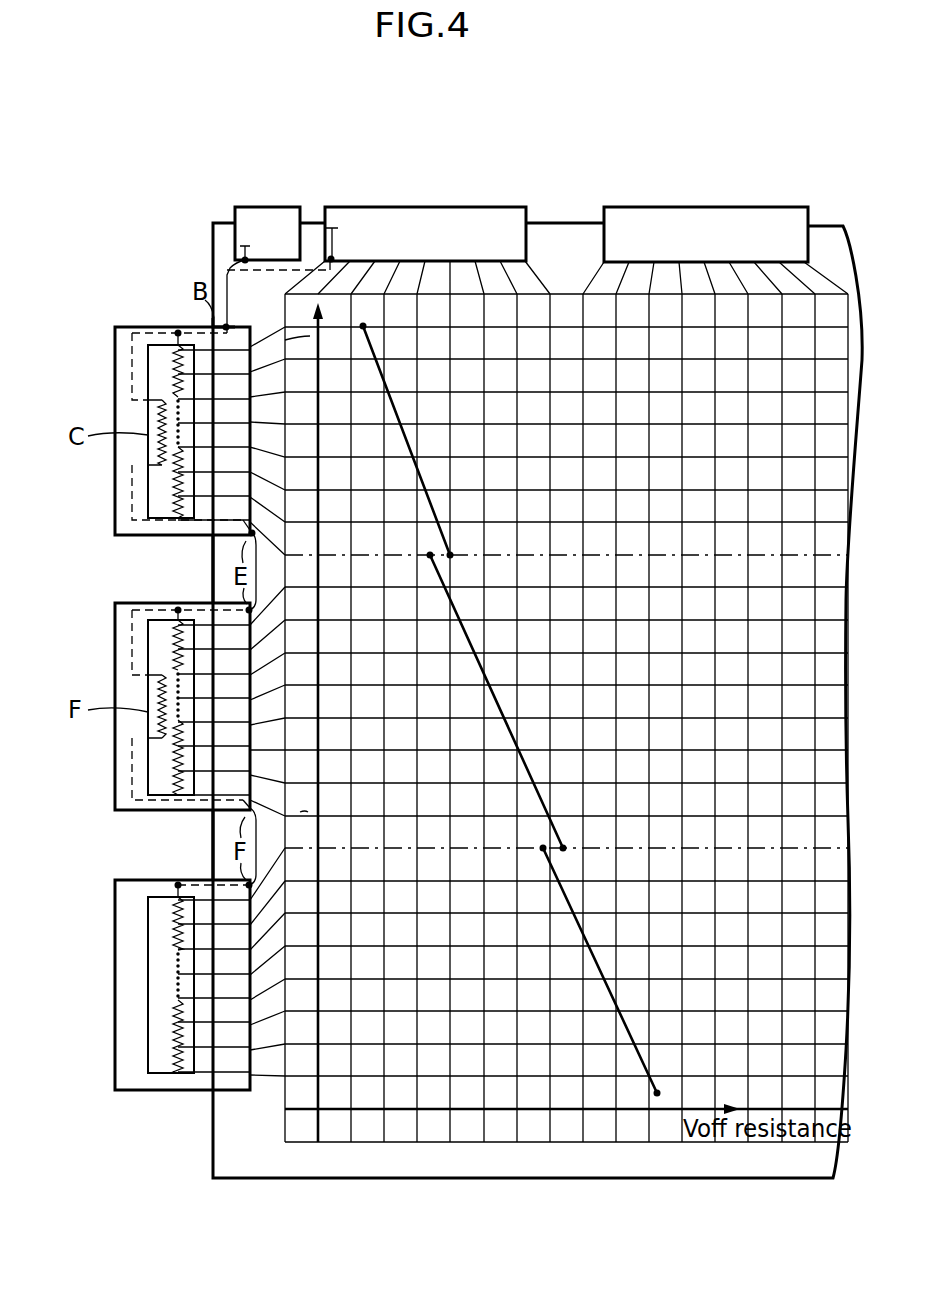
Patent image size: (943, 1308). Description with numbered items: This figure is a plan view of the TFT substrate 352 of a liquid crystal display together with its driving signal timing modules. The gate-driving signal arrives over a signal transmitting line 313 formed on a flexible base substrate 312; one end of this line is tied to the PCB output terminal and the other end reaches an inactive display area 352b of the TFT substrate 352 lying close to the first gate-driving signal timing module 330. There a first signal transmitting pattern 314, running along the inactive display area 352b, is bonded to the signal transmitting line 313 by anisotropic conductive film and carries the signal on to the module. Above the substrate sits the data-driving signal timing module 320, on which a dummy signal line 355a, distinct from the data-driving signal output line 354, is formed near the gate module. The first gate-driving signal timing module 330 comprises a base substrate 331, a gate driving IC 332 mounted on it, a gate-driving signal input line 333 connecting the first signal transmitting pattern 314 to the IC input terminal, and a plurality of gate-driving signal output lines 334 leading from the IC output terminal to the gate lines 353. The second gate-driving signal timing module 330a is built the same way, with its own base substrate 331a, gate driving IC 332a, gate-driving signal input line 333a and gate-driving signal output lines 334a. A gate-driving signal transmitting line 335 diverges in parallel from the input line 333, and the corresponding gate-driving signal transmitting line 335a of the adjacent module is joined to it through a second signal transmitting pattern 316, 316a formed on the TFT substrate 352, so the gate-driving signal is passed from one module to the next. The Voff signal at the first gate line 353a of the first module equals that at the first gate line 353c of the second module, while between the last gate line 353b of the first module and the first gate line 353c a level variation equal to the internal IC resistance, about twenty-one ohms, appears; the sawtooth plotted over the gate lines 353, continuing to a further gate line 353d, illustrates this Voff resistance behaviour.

The signal transmitting line 313 is at (238, 257).
The flexible base substrate 312 is at (263, 217).
The dummy signal line 355a is at (309, 236).
The data-driving signal output line 354 is at (340, 273).
The data-driving signal timing module 320 is at (487, 223).
The TFT substrate 352 is at (830, 310).
The inactive display area 352b is at (213, 323).
The first signal transmitting pattern 314 is at (228, 296).
The first gate line of first gate-driving signal timing module 353a is at (300, 338).
The gate-driving signal input line 333 is at (287, 353).
The gate-driving signal output lines 334 is at (231, 447).
The first gate-driving signal timing module 330 is at (110, 396).
The base substrate 331 is at (120, 508).
The gate driving IC 332 is at (163, 510).
The gate-driving signal transmitting line 335 is at (132, 483).
The last gate line of first gate-driving signal timing module 353b is at (253, 535).
The second signal transmitting pattern 316 is at (257, 578).
The first gate line of second gate-driving signal timing module 353c is at (252, 610).
The gate-driving signal input line 333a is at (287, 628).
The gate-driving signal output lines 334a is at (231, 720).
The second gate-driving signal timing module 330a is at (110, 671).
The shift register 331a is at (120, 784).
The gate driving IC 332a is at (163, 788).
The gate-driving signal transmitting line 335a is at (132, 758).
The fourth node 353d is at (305, 812).
The second signal transmitting pattern 316a is at (258, 828).
The gate lines 353 is at (263, 1077).